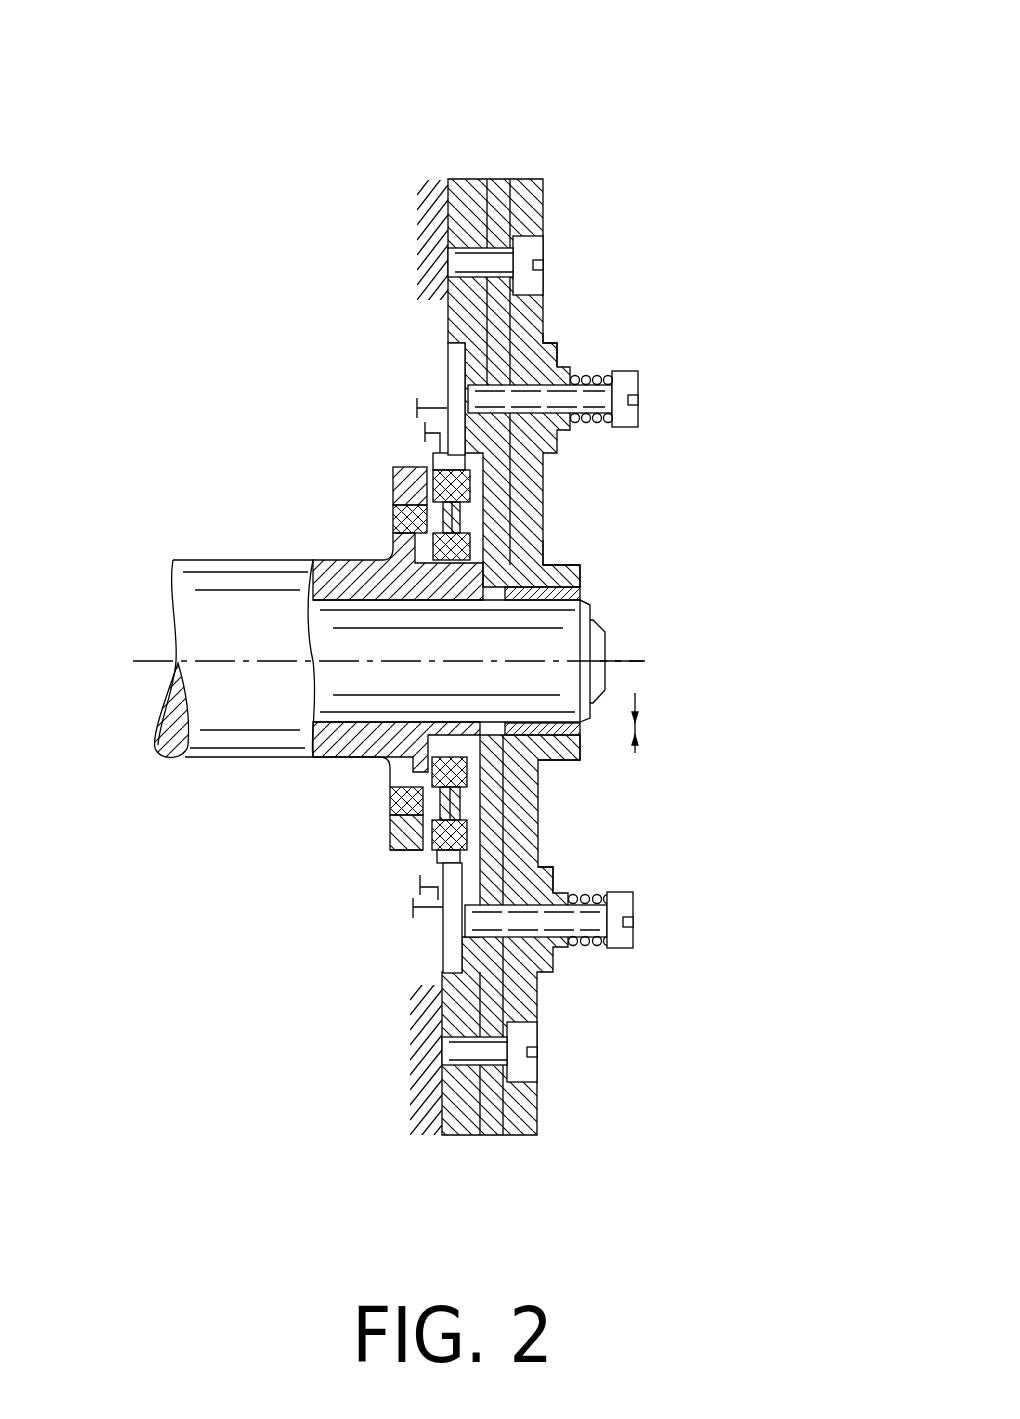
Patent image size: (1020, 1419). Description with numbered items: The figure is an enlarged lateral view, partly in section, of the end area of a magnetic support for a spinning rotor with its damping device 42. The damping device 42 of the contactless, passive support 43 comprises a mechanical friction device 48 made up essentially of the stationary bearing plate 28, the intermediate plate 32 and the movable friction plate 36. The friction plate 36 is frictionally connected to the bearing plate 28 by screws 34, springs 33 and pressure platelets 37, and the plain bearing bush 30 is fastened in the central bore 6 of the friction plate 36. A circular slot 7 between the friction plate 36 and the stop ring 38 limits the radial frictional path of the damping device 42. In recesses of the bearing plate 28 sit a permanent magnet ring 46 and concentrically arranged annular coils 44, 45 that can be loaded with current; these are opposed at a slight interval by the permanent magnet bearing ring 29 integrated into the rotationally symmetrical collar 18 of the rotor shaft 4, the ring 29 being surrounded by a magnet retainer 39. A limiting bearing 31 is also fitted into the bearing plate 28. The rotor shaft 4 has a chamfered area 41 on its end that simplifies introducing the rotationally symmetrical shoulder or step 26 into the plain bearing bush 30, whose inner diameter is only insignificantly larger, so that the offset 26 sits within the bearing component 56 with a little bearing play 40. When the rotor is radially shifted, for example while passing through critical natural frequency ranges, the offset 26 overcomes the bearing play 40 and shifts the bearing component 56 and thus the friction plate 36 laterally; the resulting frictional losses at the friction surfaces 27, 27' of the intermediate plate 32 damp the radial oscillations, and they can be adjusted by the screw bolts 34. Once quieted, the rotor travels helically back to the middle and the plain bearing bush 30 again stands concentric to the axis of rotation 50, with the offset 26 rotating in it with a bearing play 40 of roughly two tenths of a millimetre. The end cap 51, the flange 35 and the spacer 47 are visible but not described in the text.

The rotor shaft 4 is at (215, 565).
The rotationally symmetrical collar 18 is at (393, 570).
The circular slot 7 is at (387, 760).
The permanent magnet bearing ring 29 is at (395, 515).
The limiting bearing 31 is at (393, 787).
The magnet retainer 39 is at (395, 852).
The annular coil 45 is at (438, 475).
The annular coil 44 is at (445, 768).
The rotationally symmetrical shoulder or step 26 is at (557, 678).
The end cap 51 is at (607, 645).
The damping device 42 is at (563, 621).
The intermediate plate 32 is at (497, 478).
The mechanical friction device 48 is at (558, 978).
The stop ring 38 is at (527, 200).
The bearing plate 28 is at (462, 1122).
The friction surface 27' is at (570, 166).
The friction surface 27 is at (606, 185).
The pressure platelet 37 is at (557, 343).
The movable friction plate 36 is at (543, 563).
The flange 35 is at (553, 890).
The central bore 6 is at (580, 740).
The plain bearing bush 30 is at (583, 593).
The chamfered area 41 is at (587, 603).
The bearing component 56 is at (603, 592).
The bearing play 40 is at (636, 724).
The spacer ring 47 is at (453, 385).
The contactless, passive support 43 is at (399, 884).
The permanent magnet ring 46 is at (452, 517).
The spring 33 is at (597, 946).
The screw 34 is at (634, 935).
The axis of rotation 50 is at (133, 661).